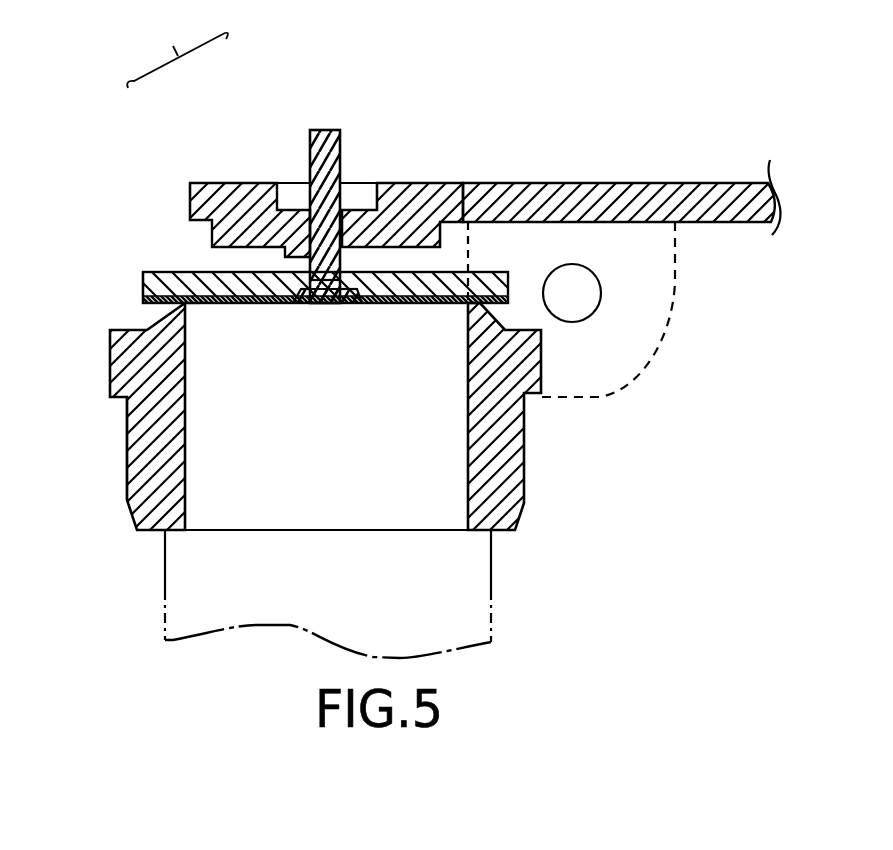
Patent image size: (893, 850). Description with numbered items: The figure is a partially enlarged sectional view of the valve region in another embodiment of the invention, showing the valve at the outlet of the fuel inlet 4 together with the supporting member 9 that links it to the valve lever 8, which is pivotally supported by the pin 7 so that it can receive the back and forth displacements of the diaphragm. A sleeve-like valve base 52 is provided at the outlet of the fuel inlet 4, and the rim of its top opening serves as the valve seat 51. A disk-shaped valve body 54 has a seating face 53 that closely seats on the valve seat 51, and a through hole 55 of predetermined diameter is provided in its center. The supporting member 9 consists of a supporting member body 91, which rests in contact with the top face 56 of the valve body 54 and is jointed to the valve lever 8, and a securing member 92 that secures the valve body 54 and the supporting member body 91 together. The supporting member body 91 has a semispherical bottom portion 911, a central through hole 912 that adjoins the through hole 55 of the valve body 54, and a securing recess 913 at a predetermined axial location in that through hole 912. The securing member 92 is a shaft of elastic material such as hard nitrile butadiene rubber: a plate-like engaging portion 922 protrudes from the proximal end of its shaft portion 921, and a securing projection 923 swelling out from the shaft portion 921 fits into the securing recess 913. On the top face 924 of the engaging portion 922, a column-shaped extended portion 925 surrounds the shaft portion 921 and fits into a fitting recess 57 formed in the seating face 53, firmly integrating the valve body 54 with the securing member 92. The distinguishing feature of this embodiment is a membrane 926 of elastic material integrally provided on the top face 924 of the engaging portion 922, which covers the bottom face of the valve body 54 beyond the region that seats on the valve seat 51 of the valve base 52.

The fuel inlet 4 is at (432, 565).
The pin 7 is at (572, 293).
The valve lever 8 is at (710, 192).
The supporting member 9 is at (177, 45).
The valve seat 51 is at (187, 303).
The valve base 52 is at (127, 450).
The seating face 53 is at (472, 312).
The valve body 54 is at (143, 290).
The through hole 55 is at (265, 240).
The top face 56 is at (507, 270).
The fitting recess 57 is at (280, 278).
The supporting member body 91 is at (233, 173).
The securing member 92 is at (298, 143).
The semispherical bottom portion 911 is at (378, 308).
The through hole 912 is at (360, 192).
The securing recess 913 is at (275, 210).
The shaft portion 921 is at (340, 155).
The engaging portion 922 is at (332, 308).
The securing projection 923 is at (383, 205).
The top face 924 is at (435, 290).
The extended portion 925 is at (293, 308).
The membrane 926 is at (190, 305).